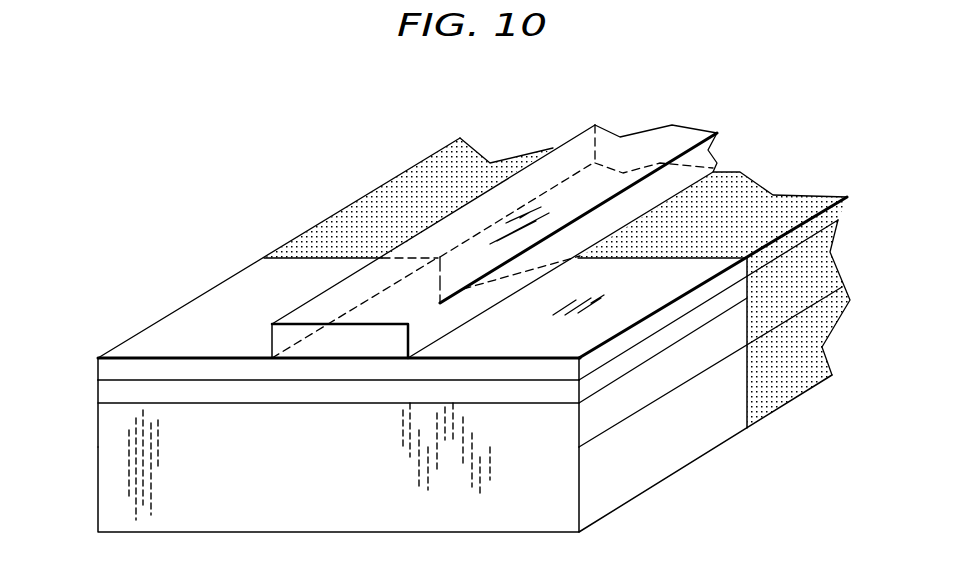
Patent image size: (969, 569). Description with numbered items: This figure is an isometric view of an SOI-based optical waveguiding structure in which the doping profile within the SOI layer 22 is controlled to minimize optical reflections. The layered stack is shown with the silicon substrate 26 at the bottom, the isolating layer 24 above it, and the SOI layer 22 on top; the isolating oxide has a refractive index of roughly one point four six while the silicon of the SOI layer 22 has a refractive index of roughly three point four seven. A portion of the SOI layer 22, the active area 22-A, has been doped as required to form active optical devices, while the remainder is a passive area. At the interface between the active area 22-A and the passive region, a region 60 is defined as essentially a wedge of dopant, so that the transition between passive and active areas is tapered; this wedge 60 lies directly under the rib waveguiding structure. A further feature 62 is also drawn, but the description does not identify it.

The SOI layer 22 is at (155, 342).
The active area of SOI layer 22-A is at (427, 178).
The isolating layer 24 is at (113, 392).
The silicon substrate 26 is at (113, 430).
The wedge of dopant 60 is at (442, 278).
The mesa block 62 is at (267, 348).